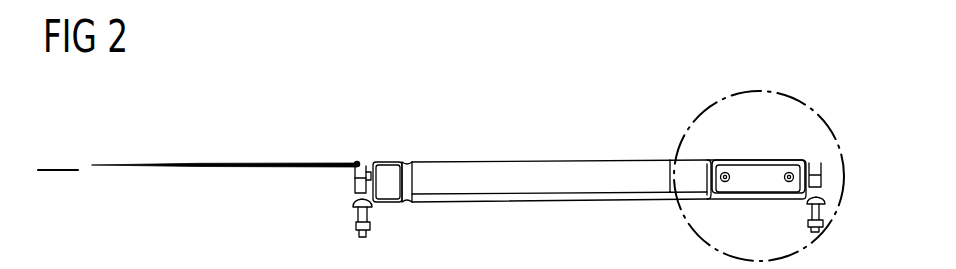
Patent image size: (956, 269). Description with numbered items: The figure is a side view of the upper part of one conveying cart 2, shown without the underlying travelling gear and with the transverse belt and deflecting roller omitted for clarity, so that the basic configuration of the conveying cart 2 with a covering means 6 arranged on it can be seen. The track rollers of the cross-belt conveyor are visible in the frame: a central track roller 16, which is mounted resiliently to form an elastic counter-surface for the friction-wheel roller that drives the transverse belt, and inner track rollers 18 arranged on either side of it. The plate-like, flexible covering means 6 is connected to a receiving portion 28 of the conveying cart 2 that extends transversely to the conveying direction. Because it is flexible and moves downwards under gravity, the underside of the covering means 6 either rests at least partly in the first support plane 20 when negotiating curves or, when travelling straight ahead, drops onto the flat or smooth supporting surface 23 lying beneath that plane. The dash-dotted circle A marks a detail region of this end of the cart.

The conveying cart 2 is at (583, 143).
The covering means 6 is at (193, 165).
The central track roller 16 is at (735, 200).
The inner track rollers 18 is at (483, 196).
The first support plane 20 is at (55, 170).
The supporting surface 23 is at (752, 160).
The receiving portion 28 is at (376, 140).
The detail region A is at (680, 133).